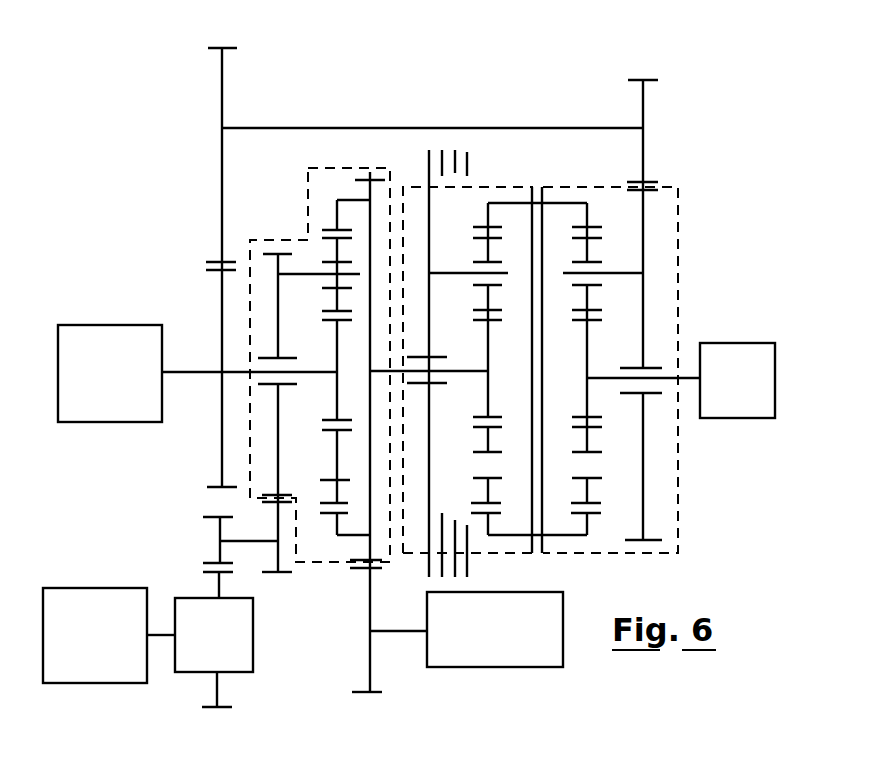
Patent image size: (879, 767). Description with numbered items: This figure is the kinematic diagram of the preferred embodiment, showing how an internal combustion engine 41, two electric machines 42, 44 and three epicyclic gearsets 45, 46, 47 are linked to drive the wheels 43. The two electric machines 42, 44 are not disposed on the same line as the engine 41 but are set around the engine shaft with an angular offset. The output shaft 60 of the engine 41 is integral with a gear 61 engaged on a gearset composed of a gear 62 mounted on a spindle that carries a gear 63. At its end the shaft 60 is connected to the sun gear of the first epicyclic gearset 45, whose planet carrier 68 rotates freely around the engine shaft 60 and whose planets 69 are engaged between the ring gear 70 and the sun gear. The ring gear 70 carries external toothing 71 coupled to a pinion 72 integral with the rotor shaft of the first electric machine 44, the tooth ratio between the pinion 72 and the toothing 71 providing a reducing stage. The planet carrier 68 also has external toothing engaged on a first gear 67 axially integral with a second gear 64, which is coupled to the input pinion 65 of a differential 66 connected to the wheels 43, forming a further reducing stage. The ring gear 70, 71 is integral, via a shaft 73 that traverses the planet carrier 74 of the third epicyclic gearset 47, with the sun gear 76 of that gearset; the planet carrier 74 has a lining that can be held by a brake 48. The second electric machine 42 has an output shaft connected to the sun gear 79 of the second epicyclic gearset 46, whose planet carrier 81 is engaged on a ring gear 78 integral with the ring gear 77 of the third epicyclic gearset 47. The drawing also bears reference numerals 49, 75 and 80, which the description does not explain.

The internal combustion engine 41 is at (110, 373).
The electric machine 42 is at (737, 380).
The wheels 43 is at (109, 635).
The first electric machine 44 is at (495, 629).
The first epicyclic gearset 45 is at (325, 166).
The second epicyclic gearset 46 is at (565, 186).
The third epicyclic gearset 47 is at (526, 186).
The brake 48 is at (468, 156).
The brake 49 is at (470, 556).
The output shaft 60 is at (192, 374).
The gear 61 is at (206, 259).
The gear 62 is at (216, 48).
The gear 63 is at (652, 78).
The second gear 64 is at (212, 529).
The input pinion 65 is at (212, 706).
The differential 66 is at (214, 635).
The first gear 67 is at (280, 578).
The planet carrier 68 is at (277, 322).
The planets 69 is at (324, 234).
The ring gear 70 is at (337, 200).
The gear 71 is at (371, 172).
The pinion 72 is at (362, 691).
The shaft 73 is at (463, 374).
The planet carrier 74 is at (430, 257).
The clutch 75 is at (484, 226).
The sun gear 76 is at (488, 356).
The ring gear 77 is at (530, 411).
The ring gear 78 is at (544, 411).
The sun gear 79 is at (587, 342).
The clutch 80 is at (596, 318).
The planet carrier 81 is at (646, 222).